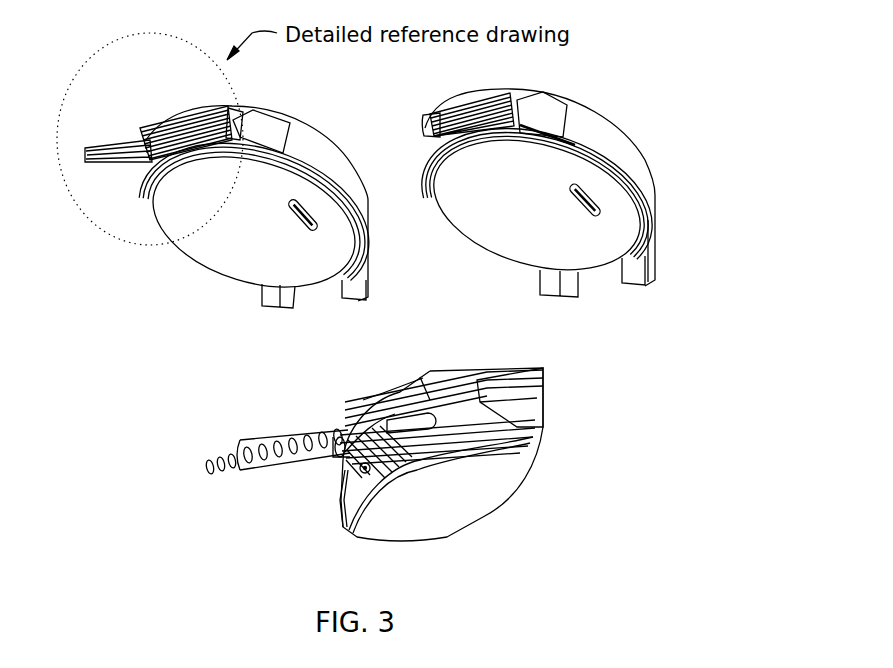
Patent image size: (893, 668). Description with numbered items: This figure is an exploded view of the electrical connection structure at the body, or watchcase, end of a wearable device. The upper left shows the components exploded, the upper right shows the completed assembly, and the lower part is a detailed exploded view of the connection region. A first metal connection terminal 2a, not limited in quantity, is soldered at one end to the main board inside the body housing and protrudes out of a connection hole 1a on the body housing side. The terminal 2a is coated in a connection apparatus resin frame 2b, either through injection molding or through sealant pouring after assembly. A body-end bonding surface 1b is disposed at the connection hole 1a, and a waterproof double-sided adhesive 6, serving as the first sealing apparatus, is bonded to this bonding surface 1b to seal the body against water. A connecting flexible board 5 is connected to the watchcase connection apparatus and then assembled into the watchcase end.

The connection hole 1a is at (380, 398).
The body-end bonding surface 1b is at (427, 387).
The first metal connection terminal 2a is at (207, 470).
The connection apparatus resin frame 2b is at (313, 467).
The connecting flexible board 5 is at (385, 427).
The waterproof double-sided adhesive 6 is at (332, 420).